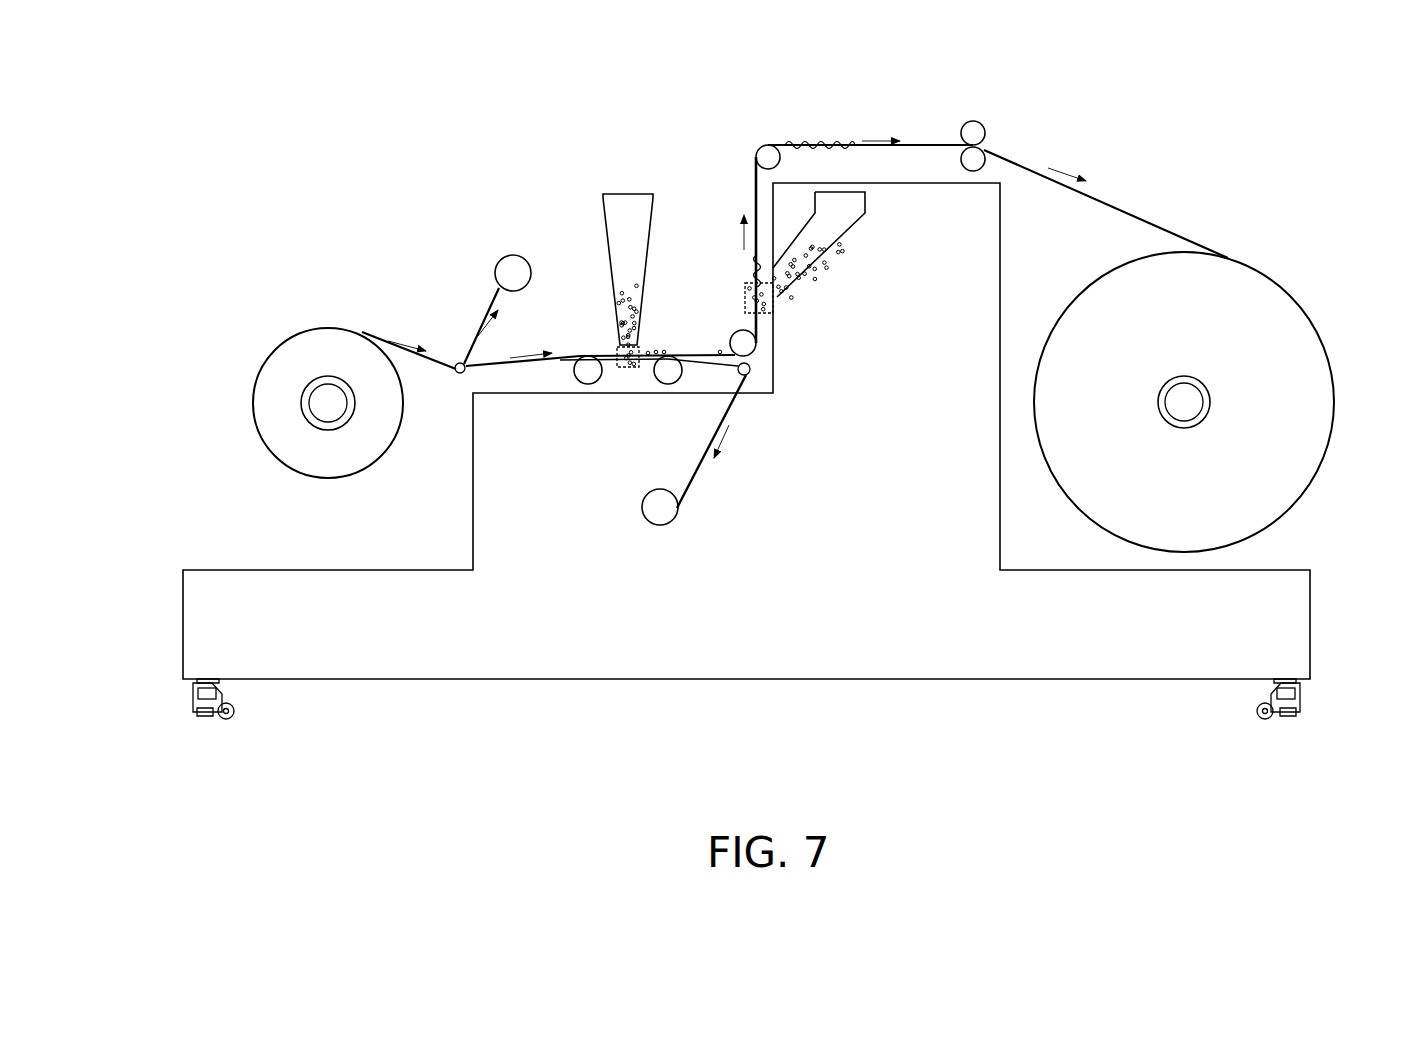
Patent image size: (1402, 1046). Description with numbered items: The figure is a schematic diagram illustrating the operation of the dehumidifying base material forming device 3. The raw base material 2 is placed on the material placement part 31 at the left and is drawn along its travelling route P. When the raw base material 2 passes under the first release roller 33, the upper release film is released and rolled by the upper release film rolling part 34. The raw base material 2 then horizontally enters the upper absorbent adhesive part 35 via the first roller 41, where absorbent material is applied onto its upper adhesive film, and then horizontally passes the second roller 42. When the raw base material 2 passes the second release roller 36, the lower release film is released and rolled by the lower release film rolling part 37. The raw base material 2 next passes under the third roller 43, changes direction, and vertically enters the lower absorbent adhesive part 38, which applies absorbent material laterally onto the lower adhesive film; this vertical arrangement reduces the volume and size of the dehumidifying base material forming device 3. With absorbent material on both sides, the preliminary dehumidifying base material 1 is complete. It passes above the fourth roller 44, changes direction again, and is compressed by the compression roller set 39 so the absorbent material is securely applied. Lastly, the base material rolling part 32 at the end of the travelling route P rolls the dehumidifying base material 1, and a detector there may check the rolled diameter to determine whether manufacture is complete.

The dehumidifying base material forming device 3 is at (186, 97).
The material placement part 31 is at (264, 354).
The raw base material 2 is at (367, 333).
The travelling route P is at (407, 332).
The first release roller 33 is at (457, 364).
The upper release film rolling part 34 is at (510, 273).
The dehumidifying base material 1 is at (757, 180).
The first roller 41 is at (588, 378).
The second roller 42 is at (668, 378).
The upper absorbent adhesive part 35 is at (606, 186).
The third roller 43 is at (740, 335).
The fourth roller 44 is at (763, 153).
The lower absorbent adhesive part 38 is at (834, 251).
The compression roller set 39 is at (978, 133).
The base material rolling part 32 is at (1309, 308).
The second release roller 36 is at (745, 378).
The lower release film rolling part 37 is at (660, 510).